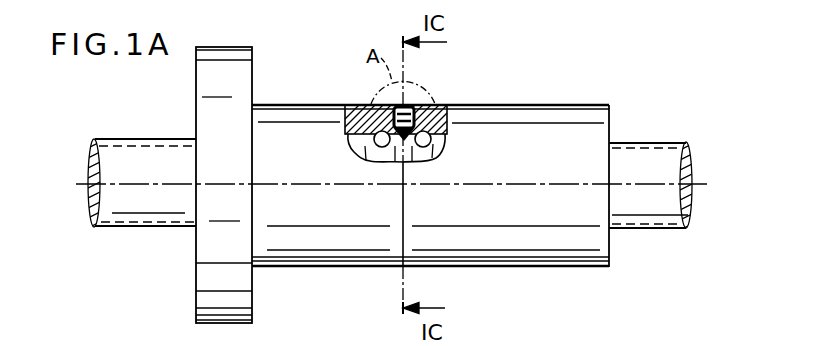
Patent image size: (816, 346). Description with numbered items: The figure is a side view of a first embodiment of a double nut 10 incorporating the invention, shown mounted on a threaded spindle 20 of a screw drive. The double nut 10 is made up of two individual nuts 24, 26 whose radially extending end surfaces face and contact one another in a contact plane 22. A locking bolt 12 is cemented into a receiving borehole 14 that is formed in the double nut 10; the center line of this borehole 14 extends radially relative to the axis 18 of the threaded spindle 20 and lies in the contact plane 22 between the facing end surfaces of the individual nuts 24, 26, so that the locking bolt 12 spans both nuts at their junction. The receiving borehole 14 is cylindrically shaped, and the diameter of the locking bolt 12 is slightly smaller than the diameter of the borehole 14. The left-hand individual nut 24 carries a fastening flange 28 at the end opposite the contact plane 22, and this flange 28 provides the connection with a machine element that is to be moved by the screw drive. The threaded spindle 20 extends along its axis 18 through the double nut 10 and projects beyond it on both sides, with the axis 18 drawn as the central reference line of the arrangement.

The double nut 10 is at (528, 103).
The locking bolt 12 is at (408, 111).
The receiving borehole 14 is at (383, 128).
The axis of the threaded spindle 18 is at (696, 185).
The threaded spindle 20 is at (668, 221).
The contact plane 22 is at (405, 172).
The left-hand individual nut 24 is at (313, 249).
The individual nut 26 is at (597, 134).
The fastening flange 28 is at (200, 272).